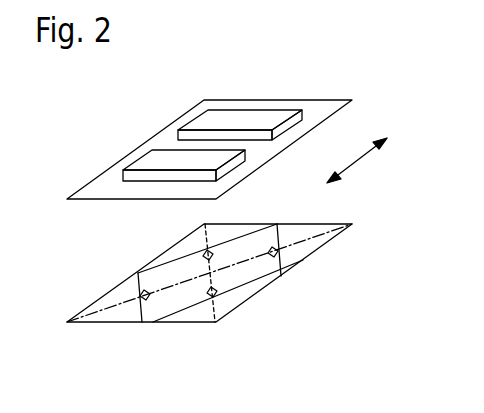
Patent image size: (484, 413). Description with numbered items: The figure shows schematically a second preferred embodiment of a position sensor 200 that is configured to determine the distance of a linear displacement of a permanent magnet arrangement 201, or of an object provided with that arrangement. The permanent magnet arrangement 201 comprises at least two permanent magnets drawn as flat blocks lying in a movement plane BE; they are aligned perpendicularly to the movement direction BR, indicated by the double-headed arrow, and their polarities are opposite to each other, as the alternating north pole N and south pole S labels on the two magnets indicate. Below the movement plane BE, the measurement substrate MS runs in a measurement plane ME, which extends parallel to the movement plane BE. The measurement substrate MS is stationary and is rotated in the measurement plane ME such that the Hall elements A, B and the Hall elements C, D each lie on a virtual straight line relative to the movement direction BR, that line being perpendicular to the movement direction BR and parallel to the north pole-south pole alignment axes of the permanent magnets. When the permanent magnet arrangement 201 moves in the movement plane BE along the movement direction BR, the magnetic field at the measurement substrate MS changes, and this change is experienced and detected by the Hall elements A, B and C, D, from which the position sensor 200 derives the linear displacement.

The position sensor 200 is at (240, 213).
The permanent magnet arrangement 201 is at (170, 162).
The movement plane BE is at (352, 100).
The movement direction BR is at (357, 164).
The measurement plane ME is at (255, 308).
The measurement substrate MS is at (249, 284).
The Hall element A is at (207, 251).
The Hall element B is at (276, 255).
The Hall element C is at (214, 296).
The Hall element D is at (147, 297).
The north pole N is at (213, 148).
The south pole S is at (214, 147).